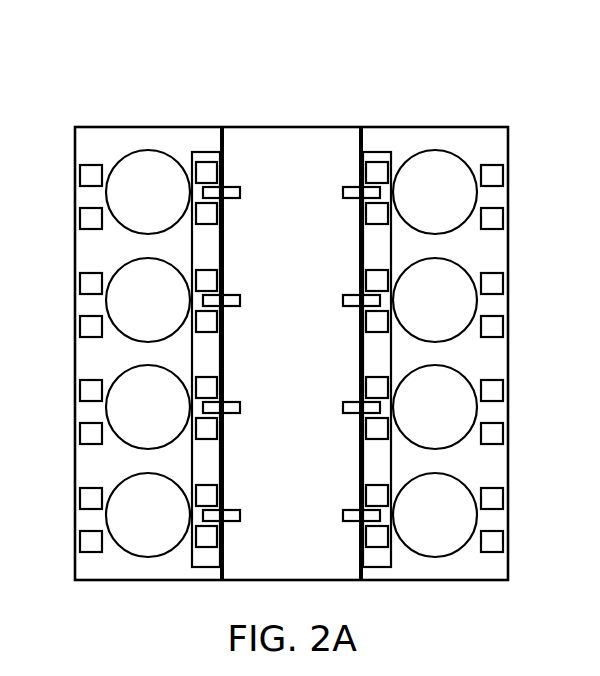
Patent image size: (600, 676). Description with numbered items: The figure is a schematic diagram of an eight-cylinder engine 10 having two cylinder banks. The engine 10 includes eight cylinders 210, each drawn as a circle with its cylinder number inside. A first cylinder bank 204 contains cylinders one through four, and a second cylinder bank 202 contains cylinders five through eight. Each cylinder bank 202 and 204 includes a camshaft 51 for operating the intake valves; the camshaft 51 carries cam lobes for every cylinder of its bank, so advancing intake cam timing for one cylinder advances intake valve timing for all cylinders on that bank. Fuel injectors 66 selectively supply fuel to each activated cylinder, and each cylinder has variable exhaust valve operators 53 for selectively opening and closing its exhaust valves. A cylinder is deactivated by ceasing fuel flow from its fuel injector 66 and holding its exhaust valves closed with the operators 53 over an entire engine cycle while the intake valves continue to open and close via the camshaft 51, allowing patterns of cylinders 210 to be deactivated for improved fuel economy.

The engine 10 is at (368, 55).
The second cylinder bank 202 is at (134, 80).
The first cylinder bank 204 is at (469, 89).
The cylinders 210 is at (106, 195).
The variable exhaust valve operators 53 is at (88, 175).
The camshaft 51 is at (213, 158).
The fuel injectors 66 is at (232, 195).